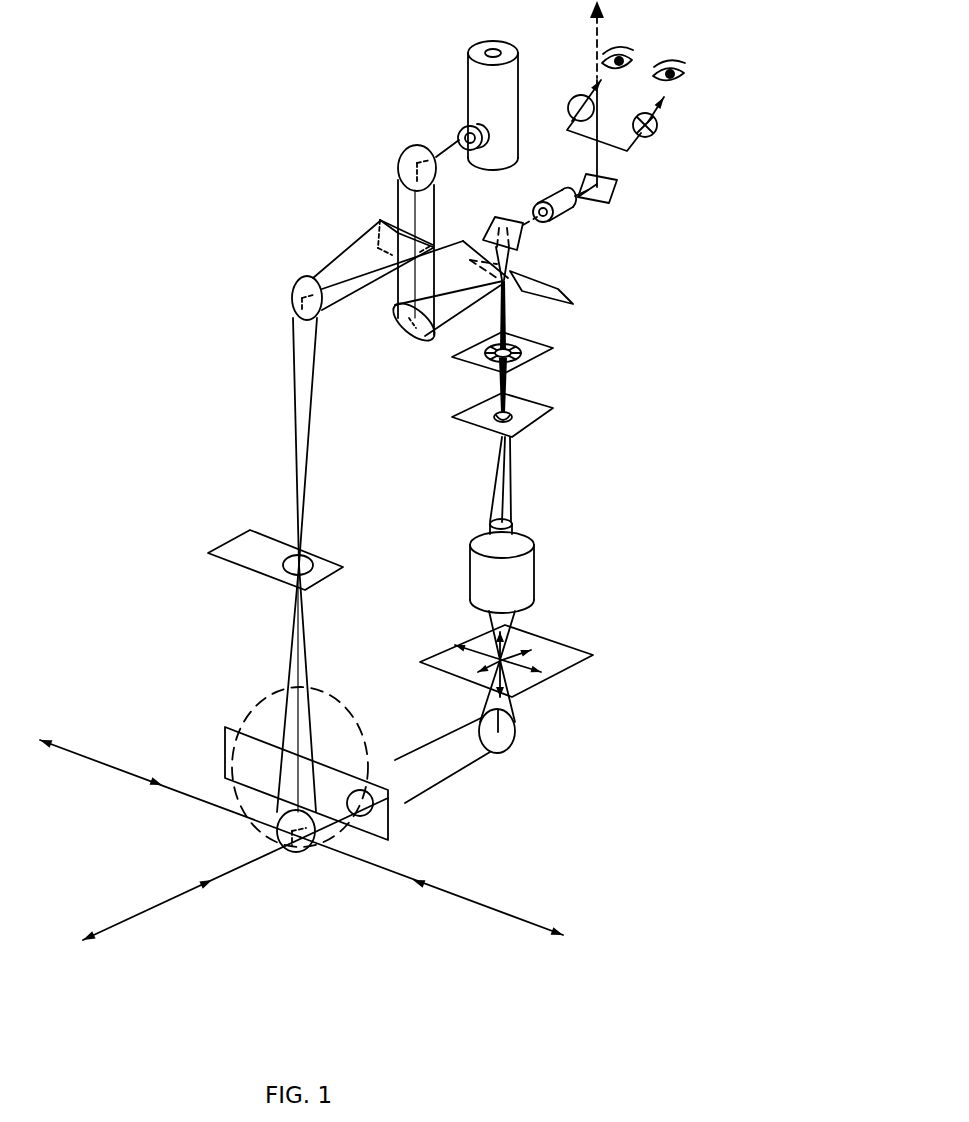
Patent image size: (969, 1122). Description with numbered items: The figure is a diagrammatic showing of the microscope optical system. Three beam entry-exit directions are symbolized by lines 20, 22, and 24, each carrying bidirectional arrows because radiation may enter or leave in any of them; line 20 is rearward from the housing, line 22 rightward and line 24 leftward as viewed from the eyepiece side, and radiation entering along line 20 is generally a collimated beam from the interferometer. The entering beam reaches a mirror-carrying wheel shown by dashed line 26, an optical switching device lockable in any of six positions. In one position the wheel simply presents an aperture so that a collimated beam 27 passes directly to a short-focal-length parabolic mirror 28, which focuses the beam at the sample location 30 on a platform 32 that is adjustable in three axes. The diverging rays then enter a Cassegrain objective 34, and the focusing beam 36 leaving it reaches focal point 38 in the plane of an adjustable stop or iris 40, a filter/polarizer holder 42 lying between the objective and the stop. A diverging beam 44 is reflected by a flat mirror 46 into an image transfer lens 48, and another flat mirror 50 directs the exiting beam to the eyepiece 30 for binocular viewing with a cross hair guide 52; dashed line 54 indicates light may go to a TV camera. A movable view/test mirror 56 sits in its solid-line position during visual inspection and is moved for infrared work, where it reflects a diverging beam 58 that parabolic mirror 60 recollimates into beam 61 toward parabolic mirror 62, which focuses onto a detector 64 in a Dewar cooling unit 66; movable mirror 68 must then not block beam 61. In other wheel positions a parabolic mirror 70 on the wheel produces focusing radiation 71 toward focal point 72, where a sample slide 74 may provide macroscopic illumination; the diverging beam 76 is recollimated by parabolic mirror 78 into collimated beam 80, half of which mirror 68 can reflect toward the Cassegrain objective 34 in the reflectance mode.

The beam entry-exit line 20 is at (133, 920).
The beam entry-exit line 22 is at (98, 763).
The beam entry-exit line 24 is at (480, 906).
The mirror-carrying wheel 26 is at (252, 710).
The collimated beam 27 is at (478, 770).
The parabolic mirror 28 is at (517, 753).
The eyepiece / sample location 30 is at (676, 126).
The platform 32 is at (573, 672).
The Cassegrain objective 34 is at (541, 577).
The focusing beam 36 is at (513, 508).
The focal point 38 is at (530, 360).
The stop 40 is at (516, 371).
The filter/polarizer holder 42 is at (518, 442).
The diverging beam 44 is at (512, 322).
The flat mirror 46 is at (522, 243).
The image transfer lens 48 is at (556, 220).
The flat mirror 50 is at (612, 199).
The cross hair guide 52 is at (655, 135).
The dashed line 54 is at (598, 21).
The view/test mirror 56 is at (574, 302).
The diverging beam 58 is at (448, 336).
The parabolic mirror 60 is at (404, 333).
The collimated beam 61 is at (394, 295).
The parabolic mirror 62 is at (396, 172).
The detector 64 is at (462, 138).
The Dewar cooling unit 66 is at (522, 103).
The movable mirror 68 is at (380, 221).
The parabolic mirror 70 is at (285, 856).
The focusing radiation 71 is at (305, 654).
The focal point 72 is at (305, 562).
The sample slide 74 is at (252, 572).
The diverging radiation beam 76 is at (288, 392).
The parabolic mirror 78 is at (289, 298).
The collimated beam 80 is at (333, 258).